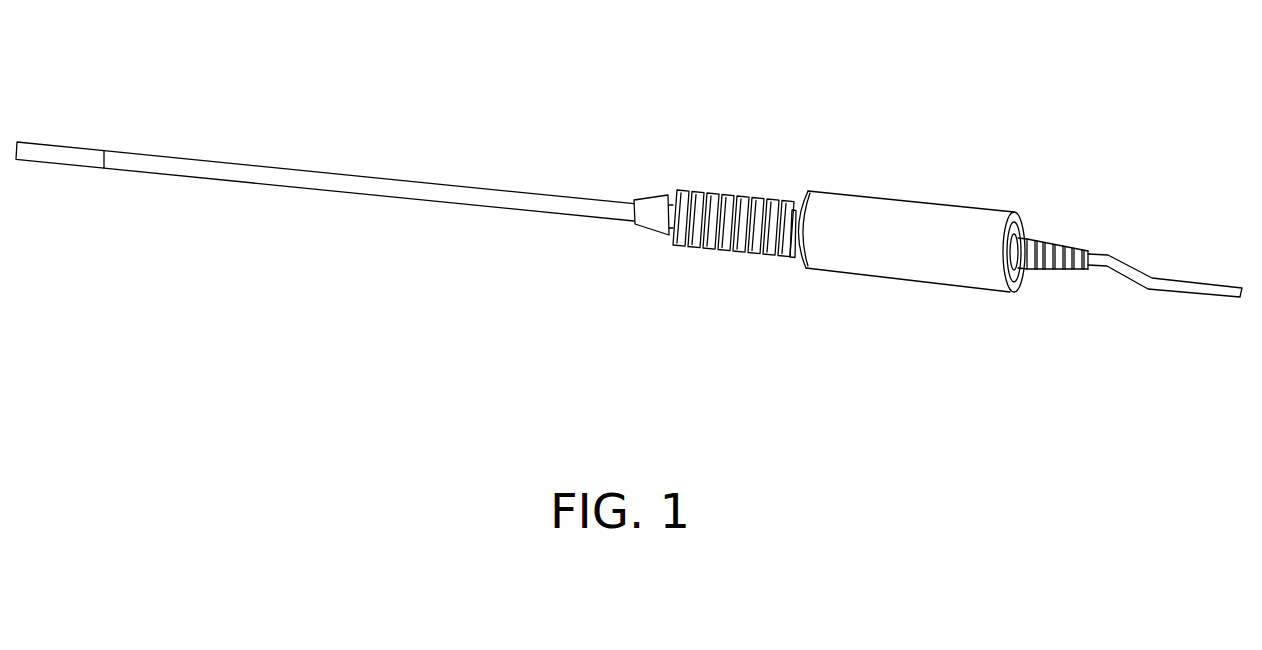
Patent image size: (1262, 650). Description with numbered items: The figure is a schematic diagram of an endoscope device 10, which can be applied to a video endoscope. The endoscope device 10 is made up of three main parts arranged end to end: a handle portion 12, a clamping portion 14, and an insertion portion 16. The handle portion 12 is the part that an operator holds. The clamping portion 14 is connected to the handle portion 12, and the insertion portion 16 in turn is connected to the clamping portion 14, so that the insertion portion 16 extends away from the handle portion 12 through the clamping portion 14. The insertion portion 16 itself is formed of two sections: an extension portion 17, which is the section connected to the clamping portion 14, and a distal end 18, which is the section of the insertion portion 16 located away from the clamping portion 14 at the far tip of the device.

The endoscope device 10 is at (1252, 434).
The handle portion 12 is at (950, 220).
The clamping portion 14 is at (742, 198).
The insertion portion 16 is at (218, 77).
The extension portion 17 is at (222, 170).
The distal end 18 is at (77, 157).